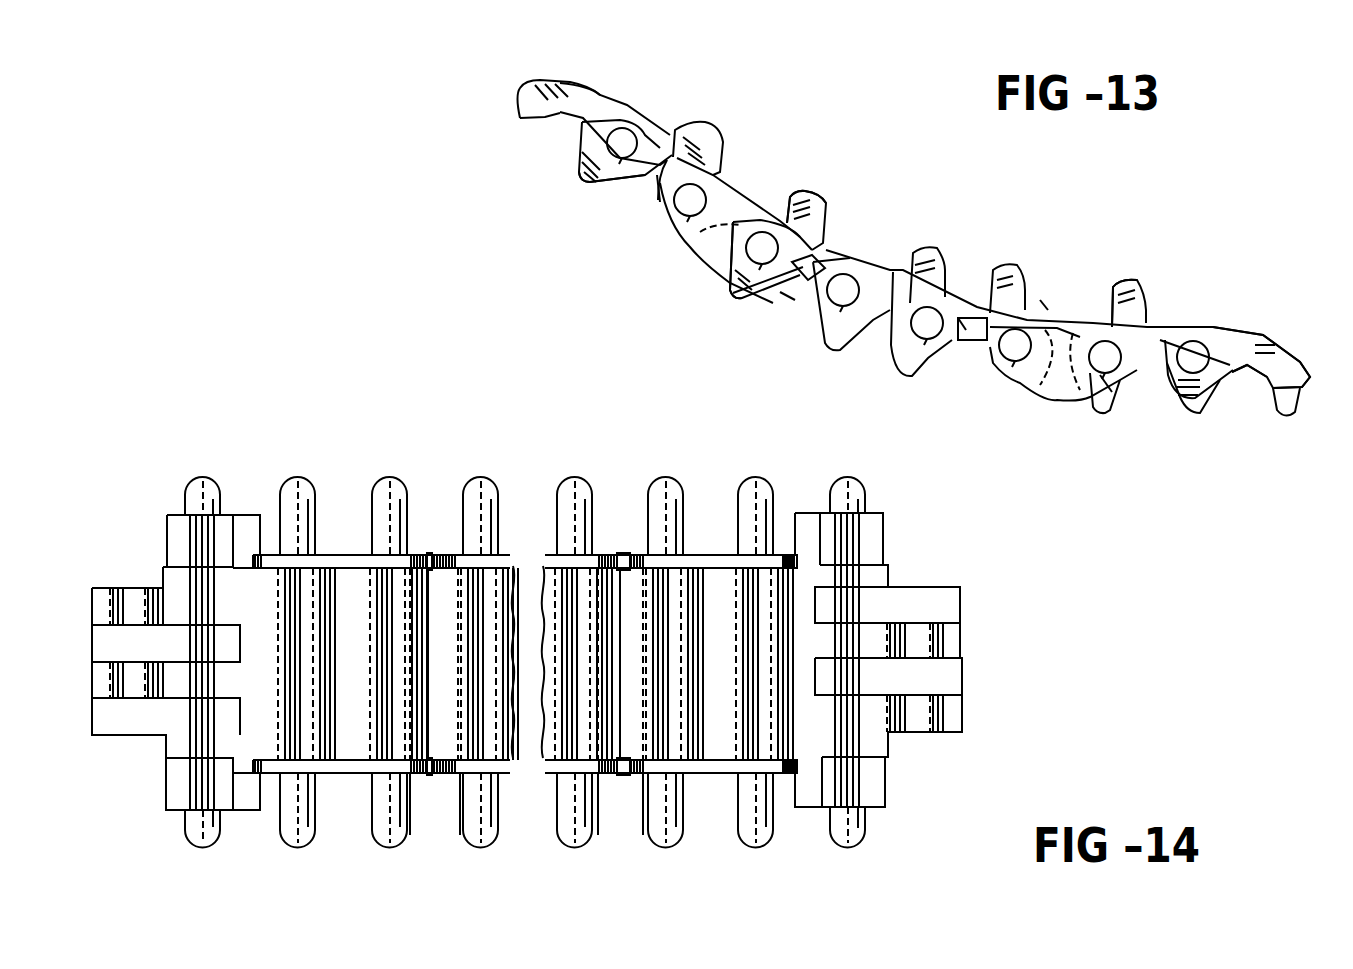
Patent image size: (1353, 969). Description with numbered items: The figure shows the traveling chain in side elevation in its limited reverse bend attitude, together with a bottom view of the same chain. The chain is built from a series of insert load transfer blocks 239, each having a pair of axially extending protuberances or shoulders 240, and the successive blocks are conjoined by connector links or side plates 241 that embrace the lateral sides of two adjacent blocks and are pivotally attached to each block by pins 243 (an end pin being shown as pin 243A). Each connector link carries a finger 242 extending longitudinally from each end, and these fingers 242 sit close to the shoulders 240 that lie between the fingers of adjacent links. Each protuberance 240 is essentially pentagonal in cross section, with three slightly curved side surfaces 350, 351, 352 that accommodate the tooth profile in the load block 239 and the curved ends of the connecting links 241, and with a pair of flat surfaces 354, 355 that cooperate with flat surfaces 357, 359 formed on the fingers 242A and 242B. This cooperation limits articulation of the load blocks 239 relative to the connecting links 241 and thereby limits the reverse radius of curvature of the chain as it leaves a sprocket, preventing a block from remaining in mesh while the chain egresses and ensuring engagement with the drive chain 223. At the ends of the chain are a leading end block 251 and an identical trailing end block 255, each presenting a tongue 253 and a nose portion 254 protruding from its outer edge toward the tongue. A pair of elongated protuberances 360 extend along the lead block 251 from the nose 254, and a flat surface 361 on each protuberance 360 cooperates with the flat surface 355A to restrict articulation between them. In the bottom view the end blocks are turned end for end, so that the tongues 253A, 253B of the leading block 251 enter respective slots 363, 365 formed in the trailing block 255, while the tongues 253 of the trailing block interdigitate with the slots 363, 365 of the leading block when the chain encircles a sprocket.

In FIG. 13, the endless flexible torque transmitting means 223 is at (1112, 380).
In FIG. 13, the insert load transfer block 239 is at (803, 190).
In FIG. 14, the insert load transfer block 239 is at (413, 775).
In FIG. 13, the protuberance 240 is at (790, 310).
In FIG. 14, the protuberance 240 is at (435, 555).
In FIG. 13, the connector link 241 is at (750, 195).
In FIG. 14, the connector link 241 is at (337, 552).
In FIG. 13, the finger 242 is at (690, 130).
In FIG. 14, the finger 242 is at (413, 555).
In FIG. 13, the finger 242A is at (1000, 295).
In FIG. 14, the finger 242A is at (643, 555).
In FIG. 13, the finger 242B is at (990, 275).
In FIG. 14, the finger 242B is at (598, 555).
In FIG. 13, the pin 243 is at (608, 190).
In FIG. 14, the pin 243 is at (205, 480).
In FIG. 13, the end pin 243A is at (1197, 400).
In FIG. 14, the end pin 243A is at (865, 492).
In FIG. 13, the leading end block 251 is at (1215, 320).
In FIG. 14, the leading end block 251 is at (890, 567).
In FIG. 13, the tongue 253 is at (520, 100).
In FIG. 14, the tongue 253 is at (100, 640).
In FIG. 14, the tongue 253A is at (948, 716).
In FIG. 13, the tongue 253B is at (1297, 408).
In FIG. 14, the tongue 253B is at (975, 633).
In FIG. 13, the nose portion 254 is at (620, 118).
In FIG. 14, the nose portion 254 is at (168, 525).
In FIG. 13, the trailing end block 255 is at (575, 118).
In FIG. 14, the trailing end block 255 is at (165, 775).
In FIG. 13, the curved side surface 350 is at (765, 305).
In FIG. 14, the curved side surface 350 is at (435, 570).
In FIG. 13, the curved side surface 351 is at (750, 285).
In FIG. 13, the curved side surface 352 is at (790, 330).
In FIG. 13, the flat surface 354 is at (870, 238).
In FIG. 13, the flat surface 355 is at (802, 215).
In FIG. 13, the flat surface 355A is at (1150, 310).
In FIG. 14, the flat surface 355A is at (783, 555).
In FIG. 13, the flat surface 357 is at (1040, 300).
In FIG. 13, the flat surface 359 is at (962, 272).
In FIG. 13, the elongated protuberance 360 is at (648, 215).
In FIG. 14, the elongated protuberance 360 is at (252, 515).
In FIG. 13, the flat surface 361 is at (1188, 386).
In FIG. 14, the slot 363 is at (178, 725).
In FIG. 14, the slot 365 is at (142, 632).